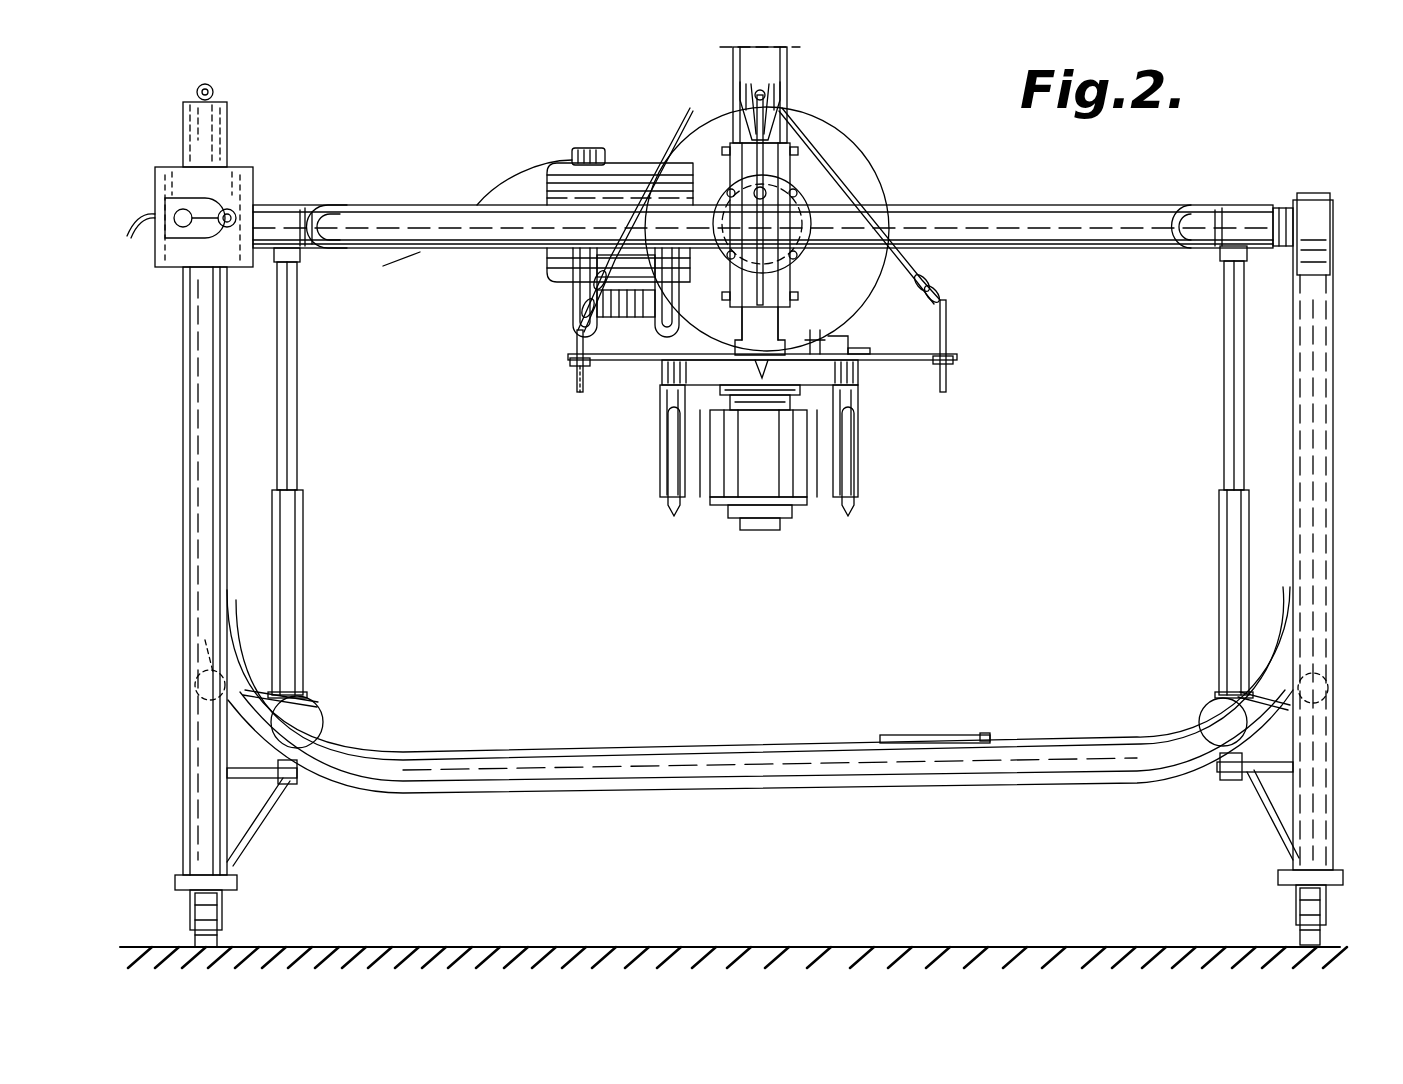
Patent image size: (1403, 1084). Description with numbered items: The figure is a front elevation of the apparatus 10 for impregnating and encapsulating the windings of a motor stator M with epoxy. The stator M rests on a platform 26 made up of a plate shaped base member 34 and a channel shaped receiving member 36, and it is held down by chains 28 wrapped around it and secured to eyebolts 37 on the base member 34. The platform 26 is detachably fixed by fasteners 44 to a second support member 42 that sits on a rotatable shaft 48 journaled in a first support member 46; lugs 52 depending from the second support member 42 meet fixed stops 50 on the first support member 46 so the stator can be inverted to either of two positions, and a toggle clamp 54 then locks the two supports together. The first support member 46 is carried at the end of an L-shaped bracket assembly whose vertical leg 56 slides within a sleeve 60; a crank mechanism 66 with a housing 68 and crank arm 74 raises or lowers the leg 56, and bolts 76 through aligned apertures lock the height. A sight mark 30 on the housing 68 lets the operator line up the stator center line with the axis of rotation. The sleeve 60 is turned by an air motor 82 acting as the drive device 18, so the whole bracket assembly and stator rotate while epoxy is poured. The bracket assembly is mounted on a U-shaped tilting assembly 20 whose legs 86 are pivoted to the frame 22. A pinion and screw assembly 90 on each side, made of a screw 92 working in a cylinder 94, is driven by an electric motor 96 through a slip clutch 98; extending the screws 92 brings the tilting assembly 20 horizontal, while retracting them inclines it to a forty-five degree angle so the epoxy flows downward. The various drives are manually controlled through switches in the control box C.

The apparatus 10 is at (498, 146).
The control box C is at (240, 155).
The motor stator M is at (884, 162).
The drive device 18 is at (660, 152).
The tilting assembly 20 is at (1112, 200).
The frame 22 is at (200, 378).
The platform 26 is at (880, 342).
The chains 28 is at (936, 300).
The sight mark 30 is at (775, 205).
The base member 34 is at (605, 362).
The receiving member 36 is at (836, 345).
The eyebolts 37 is at (574, 350).
The second support member 42 is at (862, 392).
The fasteners 44 is at (858, 356).
The first support member 46 is at (780, 470).
The rotatable shaft 48 is at (790, 390).
The stops 50 is at (680, 505).
The lugs 52 is at (672, 400).
The toggle clamp 54 is at (662, 490).
The vertical leg 56 is at (748, 62).
The sleeve 60 is at (790, 286).
The crank mechanism 66 is at (790, 108).
The housing 68 is at (792, 166).
The crank arm 74 is at (765, 130).
The bolts 76 is at (722, 151).
The air motor 82 is at (568, 196).
The legs 86 is at (338, 212).
The pinion and screw assembly 90 is at (332, 496).
The screw 92 is at (298, 408).
The cylinder 94 is at (303, 552).
The electric motor 96 is at (322, 712).
The slip clutch 98 is at (300, 262).